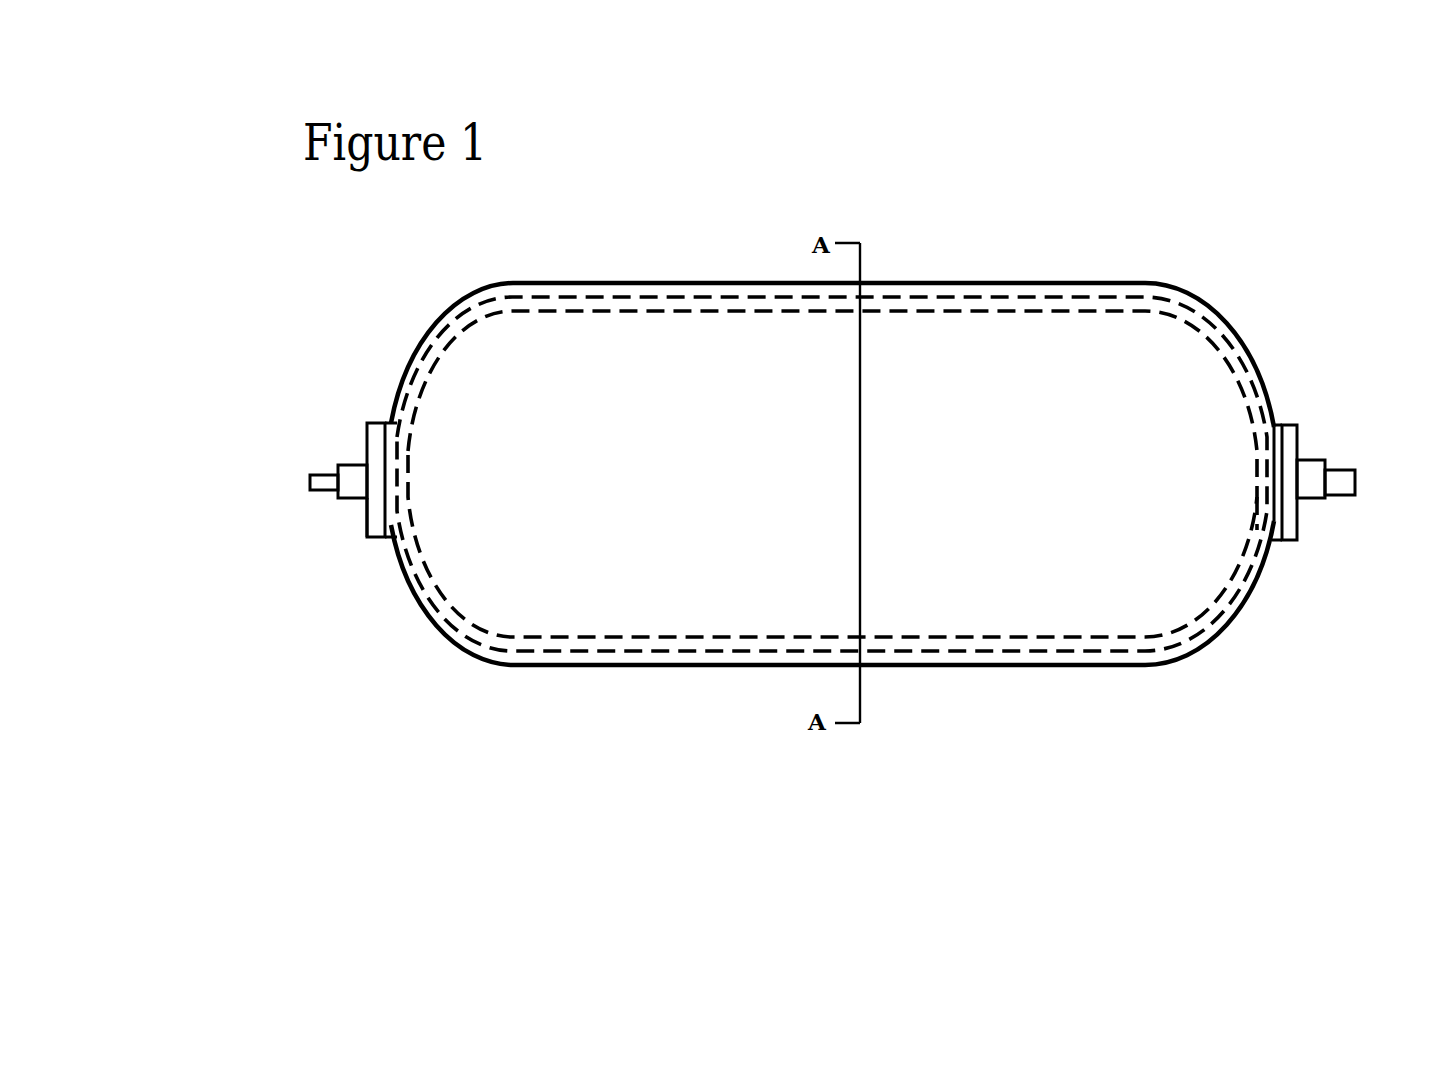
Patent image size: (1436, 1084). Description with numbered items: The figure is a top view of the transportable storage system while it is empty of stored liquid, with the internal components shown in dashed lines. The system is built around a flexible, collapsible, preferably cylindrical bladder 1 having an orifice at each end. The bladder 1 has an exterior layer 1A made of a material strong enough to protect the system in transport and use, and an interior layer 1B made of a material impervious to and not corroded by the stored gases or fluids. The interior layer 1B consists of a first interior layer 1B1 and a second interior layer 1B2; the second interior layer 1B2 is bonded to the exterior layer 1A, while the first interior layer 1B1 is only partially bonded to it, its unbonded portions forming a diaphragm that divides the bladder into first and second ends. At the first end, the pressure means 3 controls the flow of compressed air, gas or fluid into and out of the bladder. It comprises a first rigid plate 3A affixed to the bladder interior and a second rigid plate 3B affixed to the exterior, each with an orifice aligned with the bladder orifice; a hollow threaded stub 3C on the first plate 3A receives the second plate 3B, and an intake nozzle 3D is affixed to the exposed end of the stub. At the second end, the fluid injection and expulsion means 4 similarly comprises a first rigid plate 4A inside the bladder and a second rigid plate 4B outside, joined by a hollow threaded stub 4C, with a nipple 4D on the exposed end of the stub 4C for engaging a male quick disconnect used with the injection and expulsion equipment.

The bladder 1 is at (958, 447).
The exterior layer 1A is at (1075, 283).
The interior layer 1B is at (597, 325).
The first interior layer 1B1 is at (700, 308).
The second interior layer 1B2 is at (760, 298).
The pressure means 3 is at (437, 550).
The first rigid plate 3A is at (395, 463).
The second rigid plate 3B is at (366, 520).
The threaded stub 3C is at (343, 466).
The intake nozzle 3D is at (310, 466).
The fluid injection and expulsion means 4 is at (1238, 553).
The first rigid plate 4A is at (1259, 533).
The second rigid plate 4B is at (1286, 495).
The threaded stub 4C is at (1315, 454).
The nipple 4D is at (1343, 471).